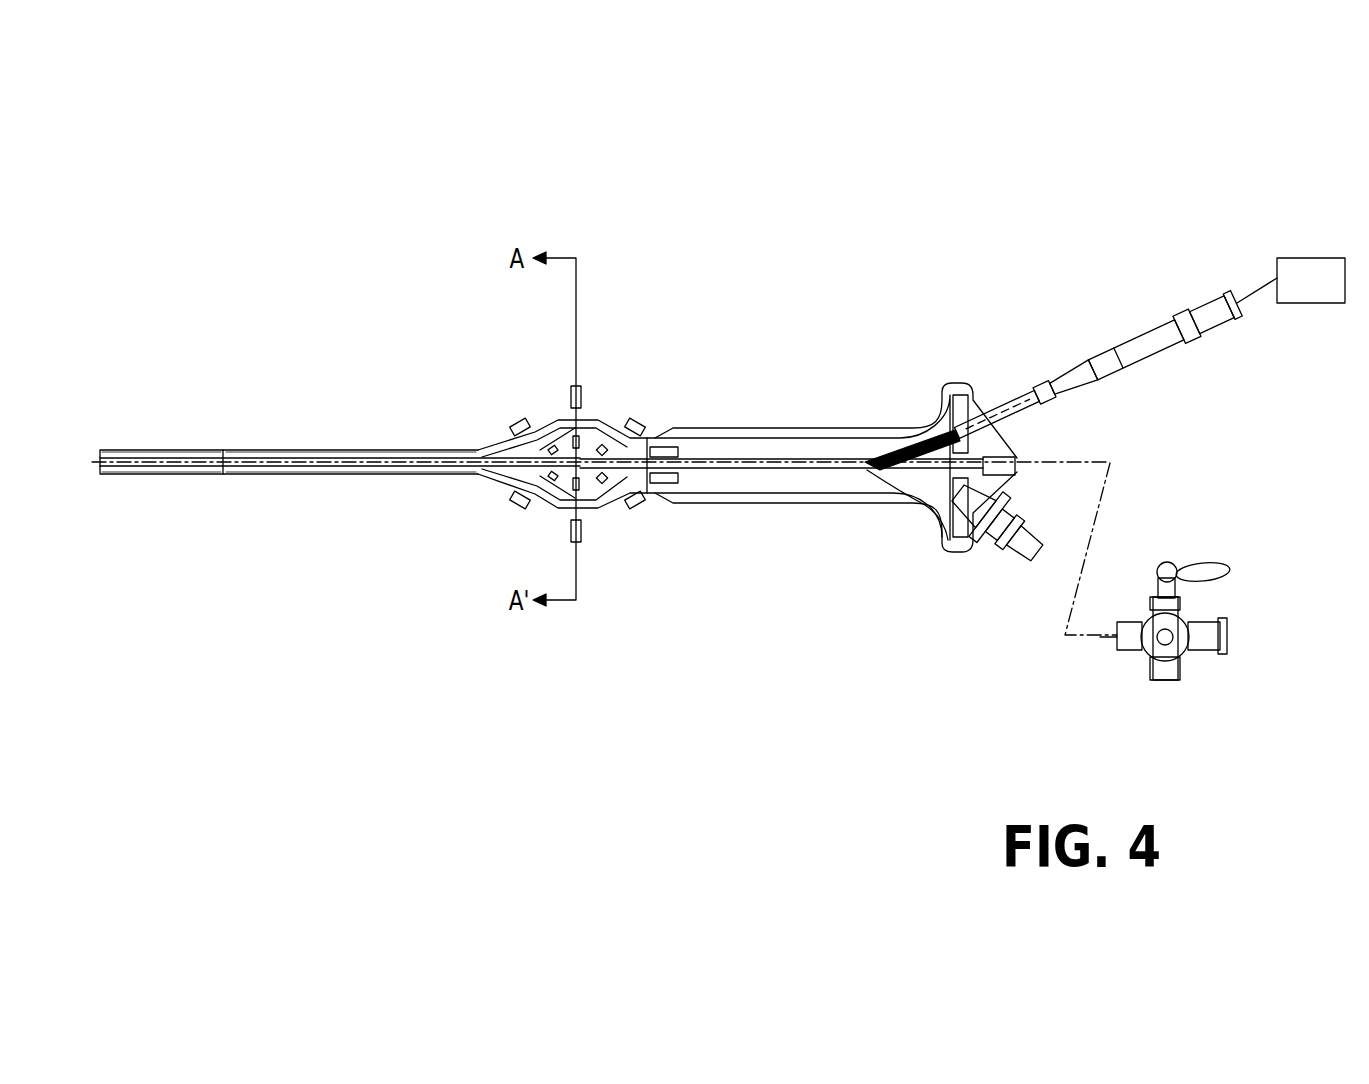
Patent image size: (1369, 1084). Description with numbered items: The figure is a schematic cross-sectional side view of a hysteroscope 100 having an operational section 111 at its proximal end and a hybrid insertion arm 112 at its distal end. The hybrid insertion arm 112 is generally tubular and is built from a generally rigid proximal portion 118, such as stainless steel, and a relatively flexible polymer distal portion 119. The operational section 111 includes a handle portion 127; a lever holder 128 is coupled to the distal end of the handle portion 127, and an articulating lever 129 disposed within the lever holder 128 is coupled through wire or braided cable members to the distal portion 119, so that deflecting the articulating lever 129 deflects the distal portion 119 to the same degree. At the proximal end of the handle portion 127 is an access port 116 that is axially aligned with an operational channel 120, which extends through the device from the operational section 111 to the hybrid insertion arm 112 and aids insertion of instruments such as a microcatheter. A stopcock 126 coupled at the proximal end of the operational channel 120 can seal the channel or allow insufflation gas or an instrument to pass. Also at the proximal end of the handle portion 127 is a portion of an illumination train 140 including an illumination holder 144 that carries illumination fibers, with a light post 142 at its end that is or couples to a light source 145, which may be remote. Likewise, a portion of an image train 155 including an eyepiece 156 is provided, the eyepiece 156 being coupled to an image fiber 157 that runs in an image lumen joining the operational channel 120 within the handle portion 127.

The hysteroscope 100 is at (673, 227).
The operational section 111 is at (503, 655).
The hybrid insertion arm 112 is at (103, 382).
The access port 116 is at (1230, 656).
The proximal portion 118 is at (228, 488).
The distal portion 119 is at (100, 488).
The operational channel 120 is at (1252, 634).
The stopcock 126 is at (1168, 540).
The handle portion 127 is at (808, 428).
The lever holder 128 is at (626, 514).
The articulating lever 129 is at (586, 393).
The illumination train 140 is at (1130, 320).
The light post 142 is at (1210, 290).
The illumination holder 144 is at (1187, 343).
The light source 145 is at (1311, 280).
The image train 155 is at (1021, 578).
The eyepiece 156 is at (1046, 545).
The image fiber 157 is at (900, 503).